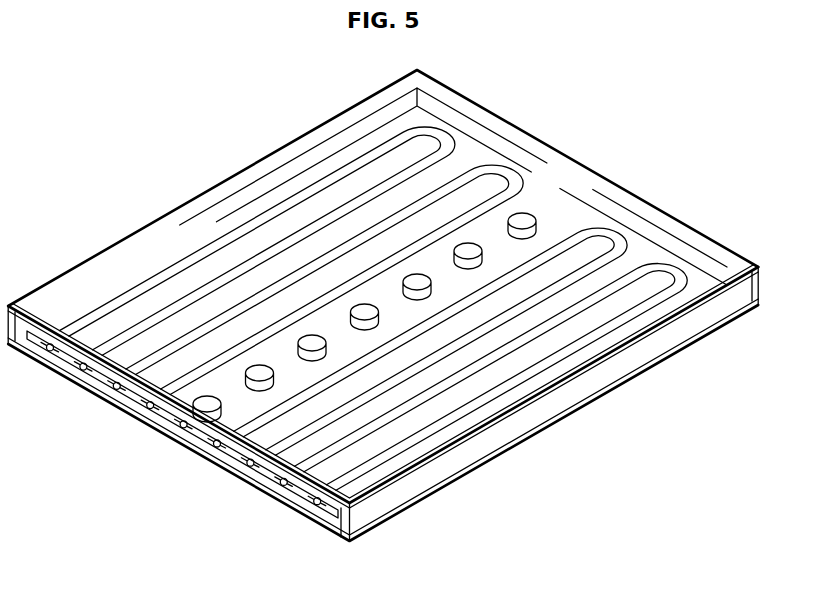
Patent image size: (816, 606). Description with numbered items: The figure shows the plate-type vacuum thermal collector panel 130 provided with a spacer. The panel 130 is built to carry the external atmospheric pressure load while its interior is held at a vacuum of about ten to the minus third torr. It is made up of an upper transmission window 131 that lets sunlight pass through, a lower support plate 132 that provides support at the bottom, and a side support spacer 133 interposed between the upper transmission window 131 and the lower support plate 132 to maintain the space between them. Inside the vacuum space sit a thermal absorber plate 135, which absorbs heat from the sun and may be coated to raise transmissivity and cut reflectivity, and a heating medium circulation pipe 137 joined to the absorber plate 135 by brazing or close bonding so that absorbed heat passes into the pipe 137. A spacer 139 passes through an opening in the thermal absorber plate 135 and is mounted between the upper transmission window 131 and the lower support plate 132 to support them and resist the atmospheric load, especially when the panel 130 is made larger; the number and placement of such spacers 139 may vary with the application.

The plate-type vacuum thermal collector panel 130 is at (152, 188).
The upper transmission window 131 is at (95, 306).
The lower support plate 132 is at (136, 418).
The side support spacer 133 is at (369, 515).
The thermal absorber plate 135 is at (105, 381).
The heating medium circulation pipe 137 is at (285, 485).
The spacer 139 is at (196, 434).